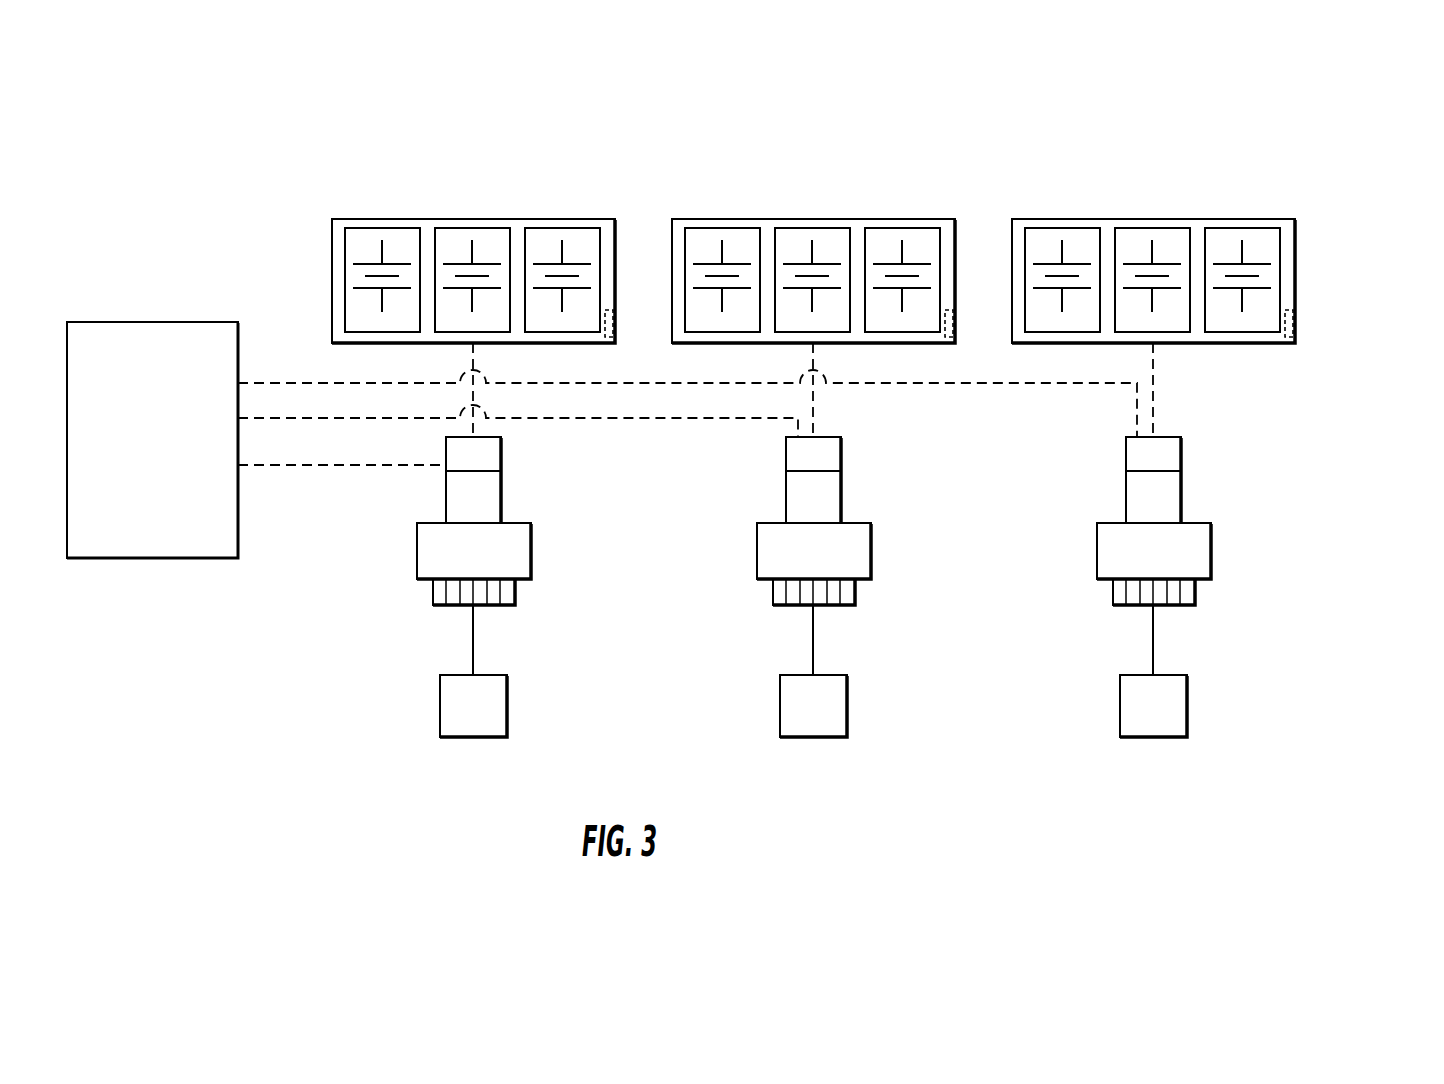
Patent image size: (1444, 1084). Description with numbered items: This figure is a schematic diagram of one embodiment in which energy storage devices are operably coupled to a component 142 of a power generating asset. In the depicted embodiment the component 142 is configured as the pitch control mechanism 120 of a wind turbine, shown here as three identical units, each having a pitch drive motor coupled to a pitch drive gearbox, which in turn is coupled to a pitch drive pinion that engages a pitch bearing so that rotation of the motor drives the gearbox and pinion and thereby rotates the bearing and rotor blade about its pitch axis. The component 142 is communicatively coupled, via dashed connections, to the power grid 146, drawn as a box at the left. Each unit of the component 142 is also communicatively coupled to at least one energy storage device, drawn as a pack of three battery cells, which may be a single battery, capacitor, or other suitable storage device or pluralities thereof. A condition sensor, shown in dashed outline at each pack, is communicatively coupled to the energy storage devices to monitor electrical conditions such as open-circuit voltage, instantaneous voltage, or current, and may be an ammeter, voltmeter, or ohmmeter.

The pitch control mechanism 120 is at (1386, 286).
The component 142 is at (1328, 539).
The power grid 146 is at (133, 478).